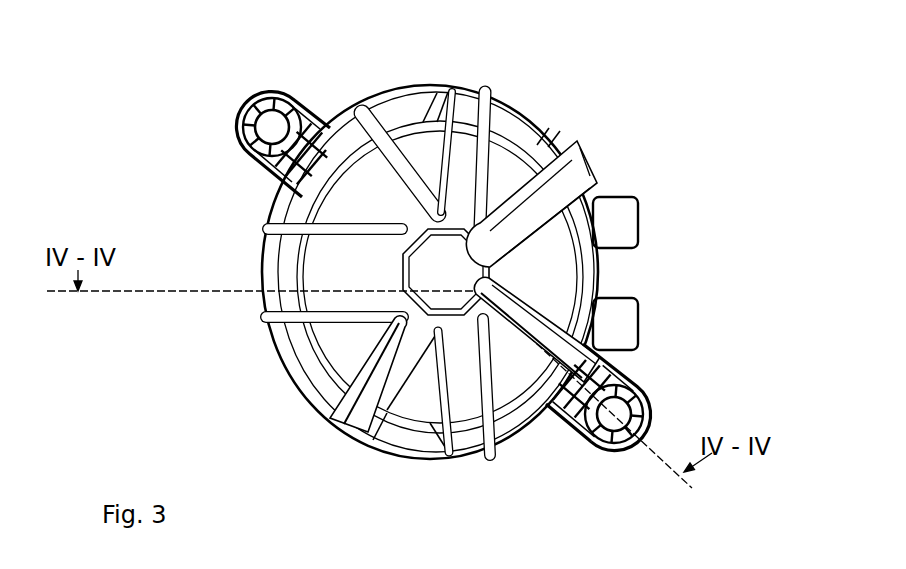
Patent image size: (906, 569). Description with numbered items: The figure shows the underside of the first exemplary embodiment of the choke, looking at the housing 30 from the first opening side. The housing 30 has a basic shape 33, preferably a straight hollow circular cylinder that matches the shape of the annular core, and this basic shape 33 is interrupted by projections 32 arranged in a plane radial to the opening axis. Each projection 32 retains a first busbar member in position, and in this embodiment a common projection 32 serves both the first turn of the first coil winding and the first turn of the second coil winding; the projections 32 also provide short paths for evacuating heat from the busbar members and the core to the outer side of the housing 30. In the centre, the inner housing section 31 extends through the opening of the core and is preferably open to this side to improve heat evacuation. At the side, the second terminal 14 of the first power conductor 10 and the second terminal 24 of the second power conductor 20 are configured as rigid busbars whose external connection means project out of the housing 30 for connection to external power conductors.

The first power conductor 10 is at (663, 226).
The second terminal 14 is at (633, 212).
The second power conductor 20 is at (663, 313).
The second terminal 24 is at (633, 333).
The housing 30 is at (403, 80).
The inner housing section 31 is at (410, 263).
The projections 32 is at (477, 96).
The basic shape 33 is at (600, 272).